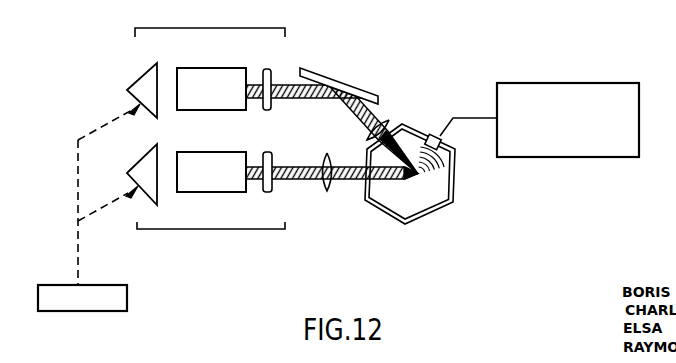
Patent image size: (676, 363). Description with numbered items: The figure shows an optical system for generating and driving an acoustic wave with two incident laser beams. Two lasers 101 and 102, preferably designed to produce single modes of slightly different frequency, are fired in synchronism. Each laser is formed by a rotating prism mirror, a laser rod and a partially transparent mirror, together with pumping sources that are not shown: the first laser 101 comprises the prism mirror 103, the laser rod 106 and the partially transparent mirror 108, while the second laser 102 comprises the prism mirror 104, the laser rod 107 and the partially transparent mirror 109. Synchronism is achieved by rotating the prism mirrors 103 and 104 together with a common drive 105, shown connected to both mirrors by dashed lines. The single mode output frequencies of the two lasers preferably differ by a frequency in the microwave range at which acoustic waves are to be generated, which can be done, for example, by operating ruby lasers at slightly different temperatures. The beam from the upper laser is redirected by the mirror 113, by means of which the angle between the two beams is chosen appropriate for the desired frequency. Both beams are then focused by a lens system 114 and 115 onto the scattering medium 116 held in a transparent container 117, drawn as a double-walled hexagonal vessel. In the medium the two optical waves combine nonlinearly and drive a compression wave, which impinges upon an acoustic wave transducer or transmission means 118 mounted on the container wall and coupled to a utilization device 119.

The laser 101 is at (204, 28).
The laser 102 is at (215, 230).
The prism mirror 103 is at (139, 80).
The prism mirror 104 is at (152, 199).
The common drive 105 is at (127, 297).
The laser rod 106 is at (203, 68).
The laser rod 107 is at (232, 193).
The partially transparent mirror 108 is at (267, 69).
The partially transparent mirror 109 is at (270, 193).
The mirror 113 is at (318, 69).
The lens system 114 is at (384, 121).
The lens system 115 is at (329, 192).
The scattering medium 116 is at (416, 206).
The transparent container 117 is at (444, 207).
The acoustic wave transducer or transmission means 118 is at (445, 144).
The utilization device 119 is at (568, 83).